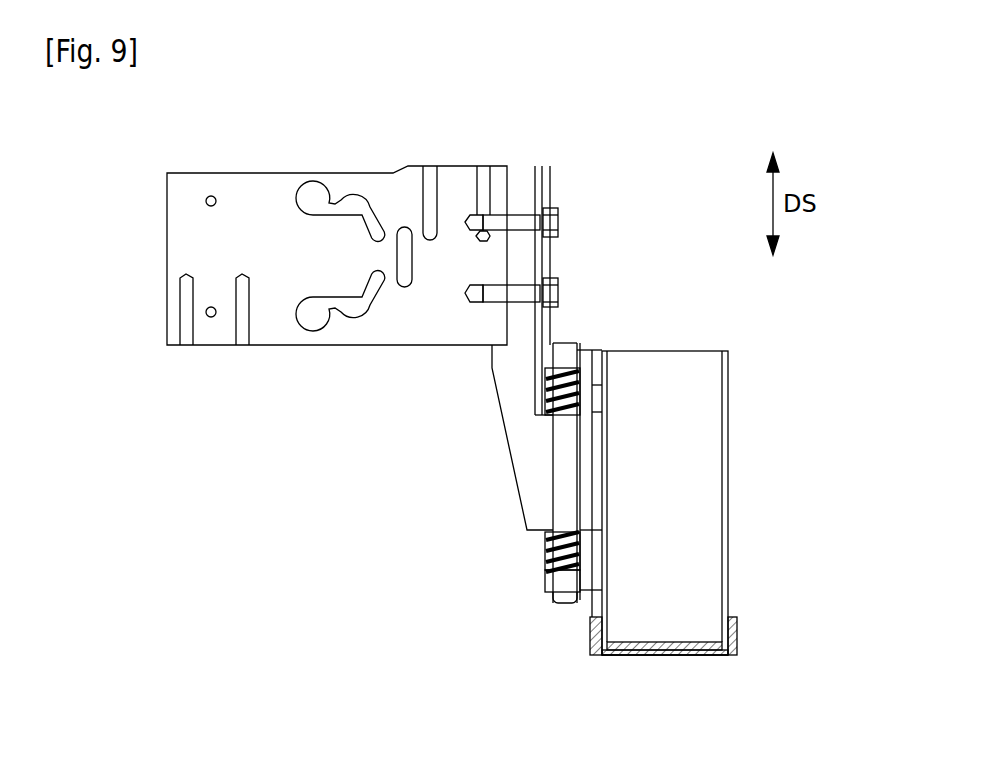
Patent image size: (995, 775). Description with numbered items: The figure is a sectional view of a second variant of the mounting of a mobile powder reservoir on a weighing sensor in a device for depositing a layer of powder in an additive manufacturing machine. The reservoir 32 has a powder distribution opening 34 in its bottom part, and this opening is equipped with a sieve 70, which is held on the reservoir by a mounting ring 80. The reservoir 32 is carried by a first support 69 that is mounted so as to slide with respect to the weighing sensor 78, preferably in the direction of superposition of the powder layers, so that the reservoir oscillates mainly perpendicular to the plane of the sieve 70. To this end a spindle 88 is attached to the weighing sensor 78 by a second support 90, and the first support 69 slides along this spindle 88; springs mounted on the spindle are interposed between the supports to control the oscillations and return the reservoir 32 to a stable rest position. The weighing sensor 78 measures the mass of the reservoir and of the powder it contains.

The weighing sensor 78 is at (267, 187).
The second support 90 is at (525, 333).
The spindle 88 is at (548, 467).
The first support 69 is at (543, 587).
The powder reservoir 32 is at (752, 462).
The sieve 70 is at (662, 648).
The mounting ring 80 is at (737, 637).
The powder distribution opening 34 is at (686, 672).